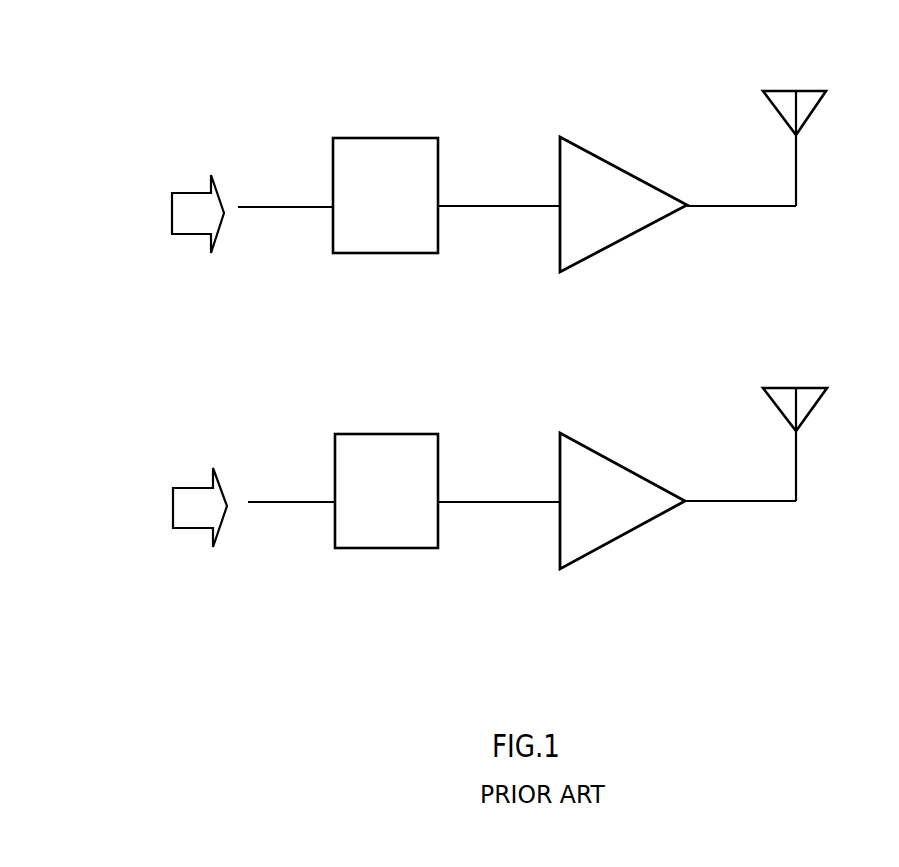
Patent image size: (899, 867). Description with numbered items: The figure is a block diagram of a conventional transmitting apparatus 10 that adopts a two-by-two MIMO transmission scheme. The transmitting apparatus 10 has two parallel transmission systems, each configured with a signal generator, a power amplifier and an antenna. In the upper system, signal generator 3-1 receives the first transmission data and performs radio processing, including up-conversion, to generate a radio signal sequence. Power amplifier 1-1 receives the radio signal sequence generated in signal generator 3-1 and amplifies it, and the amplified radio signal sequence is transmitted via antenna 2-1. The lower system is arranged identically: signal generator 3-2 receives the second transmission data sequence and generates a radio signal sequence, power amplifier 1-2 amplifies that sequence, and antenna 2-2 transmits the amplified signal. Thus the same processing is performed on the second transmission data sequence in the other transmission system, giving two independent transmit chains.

The transmitting apparatus 10 is at (518, 26).
The signal generator 3-1 is at (393, 138).
The signal generator 3-2 is at (392, 433).
The power amplifier 1-1 is at (632, 173).
The power amplifier 1-2 is at (630, 468).
The antenna 2-1 is at (803, 90).
The antenna 2-2 is at (802, 385).